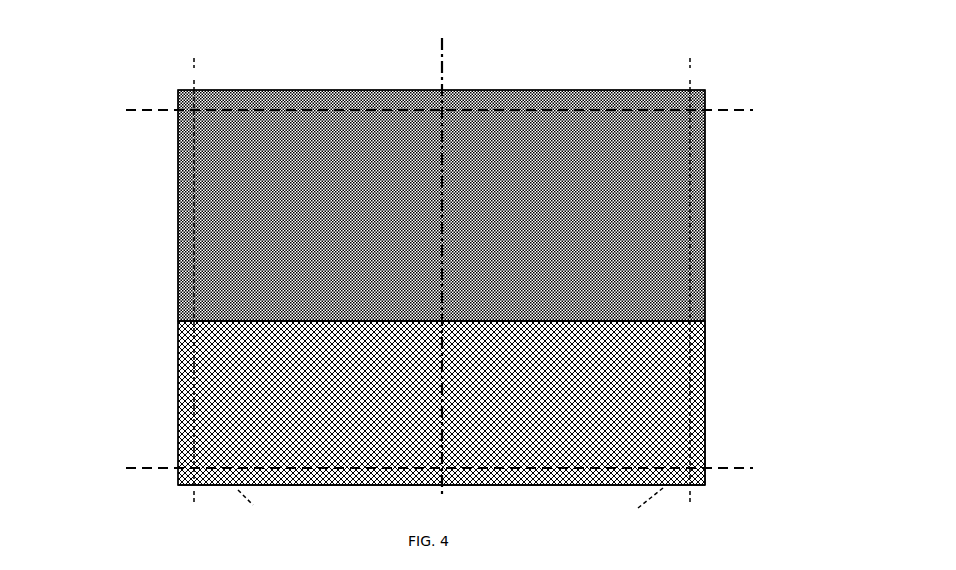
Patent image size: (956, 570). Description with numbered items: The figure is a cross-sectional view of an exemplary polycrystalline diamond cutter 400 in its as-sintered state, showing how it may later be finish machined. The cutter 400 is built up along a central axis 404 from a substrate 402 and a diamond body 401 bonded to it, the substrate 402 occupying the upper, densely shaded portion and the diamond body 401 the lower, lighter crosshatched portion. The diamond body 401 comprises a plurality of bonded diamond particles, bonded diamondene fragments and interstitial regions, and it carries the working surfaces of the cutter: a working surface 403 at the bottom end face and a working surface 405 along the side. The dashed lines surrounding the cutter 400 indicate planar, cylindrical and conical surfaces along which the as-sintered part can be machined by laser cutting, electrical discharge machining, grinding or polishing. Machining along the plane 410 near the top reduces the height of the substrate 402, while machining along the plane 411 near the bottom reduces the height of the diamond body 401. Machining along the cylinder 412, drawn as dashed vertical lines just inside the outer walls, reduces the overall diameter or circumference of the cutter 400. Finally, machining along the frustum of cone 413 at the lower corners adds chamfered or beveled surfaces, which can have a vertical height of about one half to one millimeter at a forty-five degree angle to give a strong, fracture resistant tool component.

The polycrystalline diamond cutter 400 is at (128, 165).
The diamond body 401 is at (198, 347).
The substrate 402 is at (228, 243).
The working surface 403 is at (512, 484).
The axis 404 is at (433, 61).
The working surface 405 is at (712, 376).
The plane 410 is at (710, 98).
The plane 411 is at (723, 460).
The cylinder 412 is at (186, 56).
The frustum of cone 413 is at (165, 414).